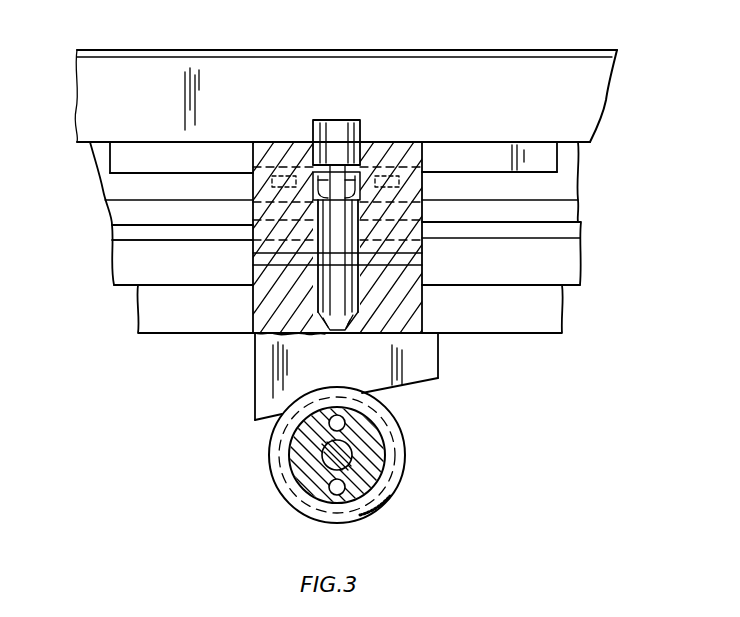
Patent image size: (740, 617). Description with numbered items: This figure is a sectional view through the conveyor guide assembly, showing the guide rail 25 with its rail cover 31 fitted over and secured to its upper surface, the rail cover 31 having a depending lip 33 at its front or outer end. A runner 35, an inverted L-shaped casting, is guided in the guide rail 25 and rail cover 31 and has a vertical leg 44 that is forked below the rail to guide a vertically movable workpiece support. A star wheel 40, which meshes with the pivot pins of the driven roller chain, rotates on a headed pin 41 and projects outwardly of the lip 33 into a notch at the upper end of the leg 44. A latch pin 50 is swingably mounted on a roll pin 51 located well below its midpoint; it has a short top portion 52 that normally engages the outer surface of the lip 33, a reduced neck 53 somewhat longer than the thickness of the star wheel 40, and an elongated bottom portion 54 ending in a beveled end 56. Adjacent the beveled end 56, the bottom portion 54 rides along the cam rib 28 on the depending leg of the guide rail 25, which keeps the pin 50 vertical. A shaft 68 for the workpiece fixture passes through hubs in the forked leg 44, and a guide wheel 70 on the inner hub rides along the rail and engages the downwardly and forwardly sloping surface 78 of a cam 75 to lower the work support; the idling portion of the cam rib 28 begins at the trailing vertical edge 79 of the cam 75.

The guide rail cover 31 is at (268, 28).
The depending lip 33 is at (596, 77).
The guide rail 25 is at (568, 179).
The cam rib 28 is at (217, 318).
The runner 35 is at (226, 247).
The vertical leg 44 is at (260, 246).
The roll pin 51 is at (415, 261).
The latch pin 50 is at (363, 132).
The top portion 52 is at (330, 128).
The reduced neck 53 is at (418, 148).
The star wheel 40 is at (393, 167).
The headed pin 41 is at (400, 203).
The bottom portion 54 is at (412, 290).
The beveled end 56 is at (323, 333).
The trailing vertical edge 79 is at (255, 380).
The downwardly and forwardly sloping surface 78 is at (268, 422).
The cam 75 is at (438, 379).
The guide wheel 70 is at (398, 437).
The shaft 68 is at (345, 458).